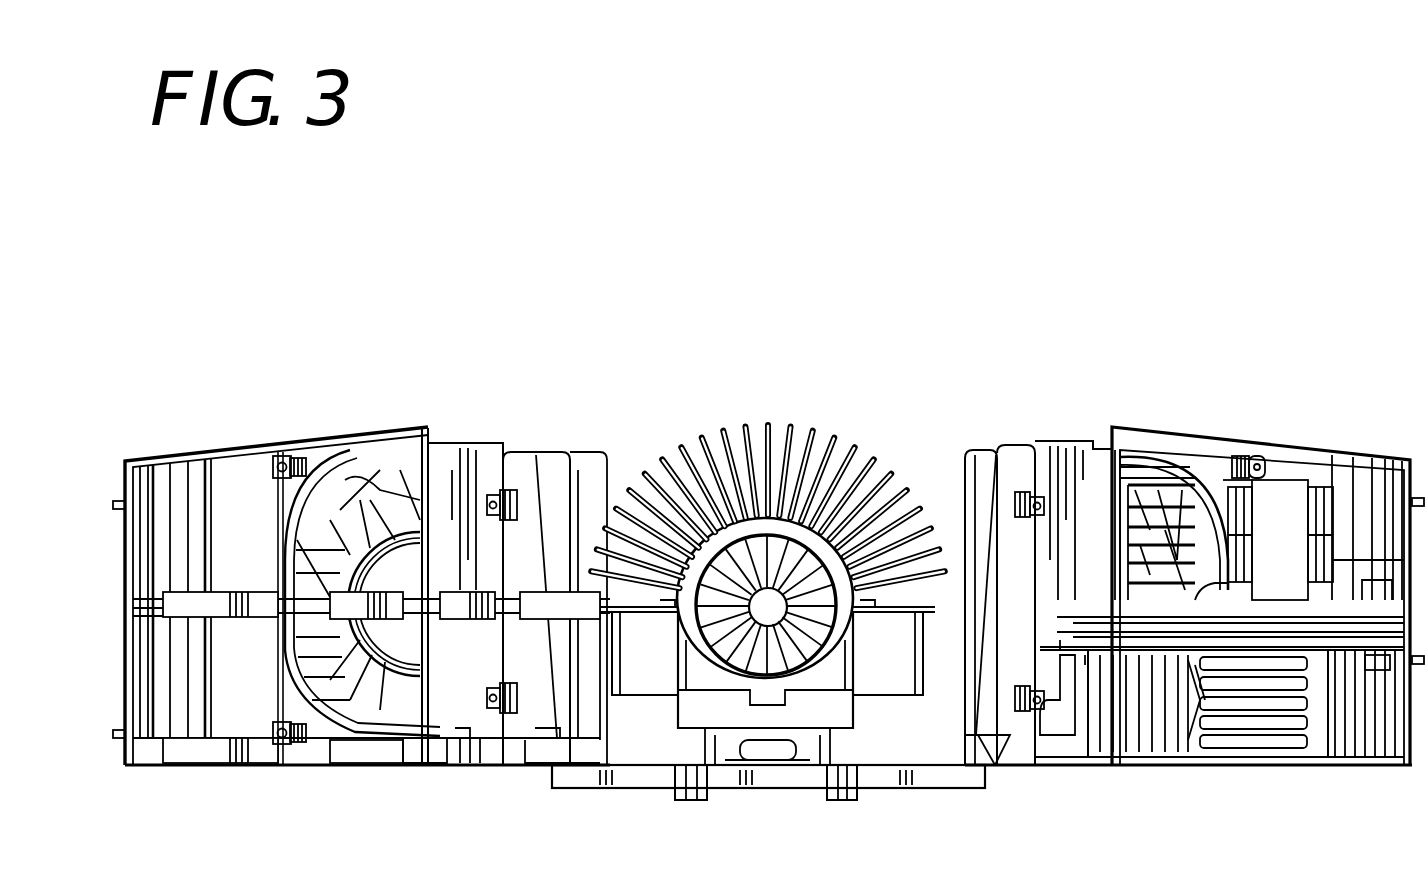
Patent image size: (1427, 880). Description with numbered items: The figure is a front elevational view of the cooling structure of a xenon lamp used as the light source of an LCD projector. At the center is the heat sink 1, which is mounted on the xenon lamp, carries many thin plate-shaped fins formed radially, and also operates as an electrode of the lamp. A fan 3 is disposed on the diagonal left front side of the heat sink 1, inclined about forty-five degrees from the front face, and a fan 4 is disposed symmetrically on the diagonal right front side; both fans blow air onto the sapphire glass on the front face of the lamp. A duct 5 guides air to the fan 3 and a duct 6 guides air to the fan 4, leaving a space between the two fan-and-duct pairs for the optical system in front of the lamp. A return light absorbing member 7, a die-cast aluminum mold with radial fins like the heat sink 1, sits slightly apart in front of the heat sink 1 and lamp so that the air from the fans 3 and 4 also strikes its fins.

The heat sink 1 is at (753, 420).
The fan 3 is at (552, 452).
The fan 4 is at (982, 450).
The duct 5 is at (237, 448).
The duct 6 is at (1262, 442).
The return light absorbing member 7 is at (805, 650).